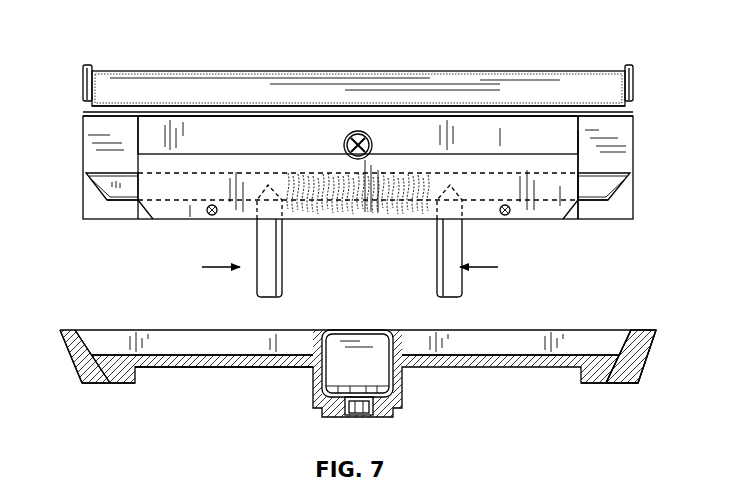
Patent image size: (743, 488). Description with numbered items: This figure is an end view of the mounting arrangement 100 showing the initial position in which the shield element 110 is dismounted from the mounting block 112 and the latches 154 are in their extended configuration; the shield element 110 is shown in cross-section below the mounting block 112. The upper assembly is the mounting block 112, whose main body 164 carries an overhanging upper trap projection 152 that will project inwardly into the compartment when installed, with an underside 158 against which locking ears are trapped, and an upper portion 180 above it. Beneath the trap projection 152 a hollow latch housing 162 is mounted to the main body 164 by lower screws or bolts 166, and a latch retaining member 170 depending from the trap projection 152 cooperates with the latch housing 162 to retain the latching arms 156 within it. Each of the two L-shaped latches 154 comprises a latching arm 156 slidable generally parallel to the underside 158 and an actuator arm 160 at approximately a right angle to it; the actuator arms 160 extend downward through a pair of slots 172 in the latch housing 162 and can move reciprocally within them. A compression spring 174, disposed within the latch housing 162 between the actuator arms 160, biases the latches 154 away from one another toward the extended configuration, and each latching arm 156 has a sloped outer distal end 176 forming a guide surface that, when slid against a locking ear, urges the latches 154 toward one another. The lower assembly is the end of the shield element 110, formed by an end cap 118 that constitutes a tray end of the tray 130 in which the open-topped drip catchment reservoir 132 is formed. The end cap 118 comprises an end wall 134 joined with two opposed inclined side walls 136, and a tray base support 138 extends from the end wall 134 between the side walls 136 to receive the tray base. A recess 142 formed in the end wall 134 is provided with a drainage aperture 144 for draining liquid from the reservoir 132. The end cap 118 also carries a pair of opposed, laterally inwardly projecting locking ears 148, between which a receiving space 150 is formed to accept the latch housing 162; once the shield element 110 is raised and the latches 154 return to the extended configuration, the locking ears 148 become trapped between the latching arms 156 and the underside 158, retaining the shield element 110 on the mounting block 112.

The lighting assembly 100 is at (104, 52).
The shield element 110 is at (118, 418).
The mounting block 112 is at (80, 134).
The end cap 118 is at (652, 359).
The tray 130 is at (601, 328).
The drip catchment reservoir 132 is at (543, 351).
The end wall 134 is at (211, 350).
The side walls 136 is at (100, 354).
The tray base support 138 is at (228, 369).
The recess 142 is at (345, 376).
The drainage aperture 144 is at (360, 417).
The locking ears 148 is at (72, 366).
The receiving space 150 is at (181, 369).
The trap projection 152 is at (631, 110).
The latches 154 is at (290, 228).
The latching arm 156 is at (117, 192).
The underside 158 is at (616, 118).
The actuator arm 160 is at (273, 283).
The latch housing 162 is at (167, 208).
The main body 164 is at (616, 162).
The lower screws or bolts 166 is at (214, 215).
The latch retaining member 170 is at (252, 143).
The slots 172 is at (324, 220).
The compression spring 174 is at (413, 160).
The sloped outer distal end 176 is at (82, 200).
The tray 180 is at (211, 103).